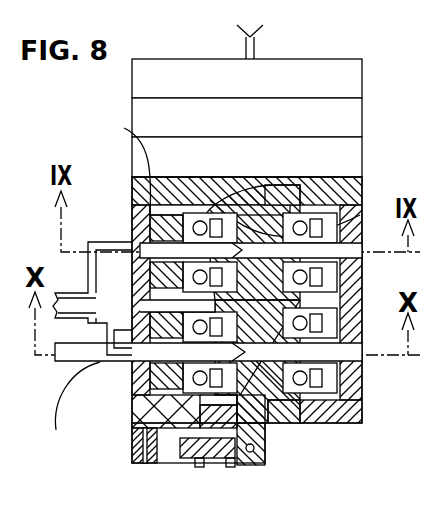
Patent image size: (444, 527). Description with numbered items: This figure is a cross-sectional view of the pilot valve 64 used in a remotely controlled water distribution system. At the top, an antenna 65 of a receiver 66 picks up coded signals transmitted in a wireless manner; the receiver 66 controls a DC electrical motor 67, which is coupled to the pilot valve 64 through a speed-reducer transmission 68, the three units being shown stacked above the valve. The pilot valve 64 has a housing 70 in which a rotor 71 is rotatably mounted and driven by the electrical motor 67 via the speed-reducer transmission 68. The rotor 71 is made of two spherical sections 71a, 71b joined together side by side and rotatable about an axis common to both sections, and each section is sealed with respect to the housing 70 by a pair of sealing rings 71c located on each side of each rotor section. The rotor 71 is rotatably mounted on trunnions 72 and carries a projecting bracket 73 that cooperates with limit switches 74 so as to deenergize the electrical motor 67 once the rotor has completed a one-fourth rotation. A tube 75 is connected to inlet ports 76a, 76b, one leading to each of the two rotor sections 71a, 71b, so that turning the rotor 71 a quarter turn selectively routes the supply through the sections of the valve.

The pilot valve 64 is at (134, 190).
The antenna 65 is at (256, 30).
The receiver 66 is at (362, 74).
The DC electrical motor 67 is at (362, 117).
The speed-reducer transmission 68 is at (362, 150).
The housing 70 is at (130, 393).
The rotor 71 is at (130, 446).
The first spherical rotor section 71a is at (300, 215).
The second spherical rotor section 71b is at (298, 425).
The sealing rings 71c is at (150, 282).
The trunnions 72 is at (264, 432).
The projecting bracket 73 is at (233, 470).
The limit switches 74 is at (167, 458).
The tube 75 is at (58, 310).
The inlet port 76a is at (115, 161).
The inlet port 76b is at (71, 413).